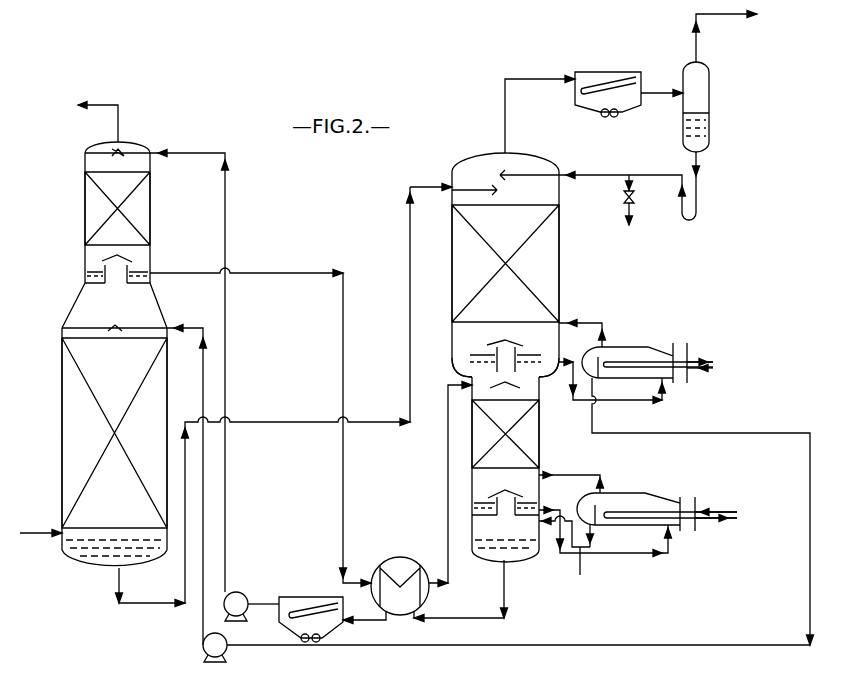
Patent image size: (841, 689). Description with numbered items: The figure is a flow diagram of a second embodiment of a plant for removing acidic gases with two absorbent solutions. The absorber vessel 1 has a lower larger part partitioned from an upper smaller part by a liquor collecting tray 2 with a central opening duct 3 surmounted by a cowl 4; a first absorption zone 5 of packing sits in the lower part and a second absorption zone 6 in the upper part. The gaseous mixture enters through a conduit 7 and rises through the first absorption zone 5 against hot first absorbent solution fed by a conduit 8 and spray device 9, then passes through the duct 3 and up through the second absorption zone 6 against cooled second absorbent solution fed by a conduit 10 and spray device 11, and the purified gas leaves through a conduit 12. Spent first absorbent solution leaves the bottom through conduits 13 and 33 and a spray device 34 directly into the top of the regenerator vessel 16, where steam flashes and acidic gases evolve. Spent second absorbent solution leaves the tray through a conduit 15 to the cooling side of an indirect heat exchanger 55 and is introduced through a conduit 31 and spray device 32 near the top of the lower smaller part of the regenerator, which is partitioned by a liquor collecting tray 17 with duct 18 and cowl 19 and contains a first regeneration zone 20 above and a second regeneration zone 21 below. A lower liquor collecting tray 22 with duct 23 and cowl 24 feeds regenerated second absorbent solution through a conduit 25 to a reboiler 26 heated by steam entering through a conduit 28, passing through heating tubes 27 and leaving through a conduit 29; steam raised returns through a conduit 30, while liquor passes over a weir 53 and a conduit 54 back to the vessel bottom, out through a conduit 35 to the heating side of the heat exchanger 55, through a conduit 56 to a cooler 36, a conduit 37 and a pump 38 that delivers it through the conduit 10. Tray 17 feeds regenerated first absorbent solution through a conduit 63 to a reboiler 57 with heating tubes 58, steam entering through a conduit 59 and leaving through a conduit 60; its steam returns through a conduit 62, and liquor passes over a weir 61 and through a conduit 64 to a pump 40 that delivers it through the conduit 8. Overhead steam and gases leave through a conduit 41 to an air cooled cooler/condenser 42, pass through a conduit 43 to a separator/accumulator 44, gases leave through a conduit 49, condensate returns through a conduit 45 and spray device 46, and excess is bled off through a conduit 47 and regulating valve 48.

The absorber vessel 1 is at (158, 306).
The liquor collecting tray 2 is at (88, 285).
The central opening duct 3 is at (85, 273).
The cowl 4 is at (102, 261).
The first absorption zone 5 is at (158, 425).
The second absorption zone 6 is at (137, 207).
The conduit 7 is at (36, 536).
The conduit 8 is at (185, 328).
The spray device 9 is at (62, 328).
The conduit 10 is at (188, 152).
The spray device 11 is at (105, 153).
The conduit 12 is at (121, 123).
The conduit 13 is at (275, 422).
The conduit 15 is at (180, 273).
The regenerator vessel 16 is at (452, 345).
The liquor collecting tray 17 is at (541, 378).
The central opening duct 18 is at (478, 364).
The cowl 19 is at (487, 348).
The first regeneration zone 20 is at (545, 268).
The second regeneration zone 21 is at (526, 447).
The liquor collecting tray 22 is at (487, 517).
The central opening duct 23 is at (484, 503).
The cowl 24 is at (490, 492).
The conduit 25 is at (544, 503).
The reboiler 26 is at (626, 493).
The heating tubes 27 is at (660, 512).
The conduit 28 is at (722, 511).
The conduit 29 is at (716, 520).
The conduit 30 is at (572, 475).
The conduit 31 is at (448, 447).
The spray device 32 is at (490, 388).
The conduit 33 is at (420, 187).
The spray device 34 is at (497, 190).
The conduit 35 is at (506, 600).
The cooler 36 is at (305, 597).
The conduit 37 is at (255, 604).
The pump 38 is at (241, 616).
The pump 40 is at (204, 646).
The conduit 41 is at (507, 127).
The air cooled cooler/condenser 42 is at (603, 72).
The conduit 43 is at (650, 93).
The separator/accumulator 44 is at (710, 97).
The conduit 45 is at (588, 175).
The spray device 46 is at (500, 174).
The conduit 47 is at (638, 214).
The regulating valve 48 is at (638, 197).
The conduit 49 is at (700, 47).
The weir 53 is at (598, 527).
The conduit 54 is at (568, 554).
The indirect heat exchanger 55 is at (390, 566).
The conduit 56 is at (370, 622).
The reboiler 57 is at (628, 347).
The heating tubes 58 is at (660, 362).
The conduit 59 is at (706, 361).
The conduit 60 is at (707, 369).
The weir 61 is at (604, 376).
The conduit 62 is at (585, 318).
The conduit 63 is at (573, 386).
The conduit 64 is at (590, 417).